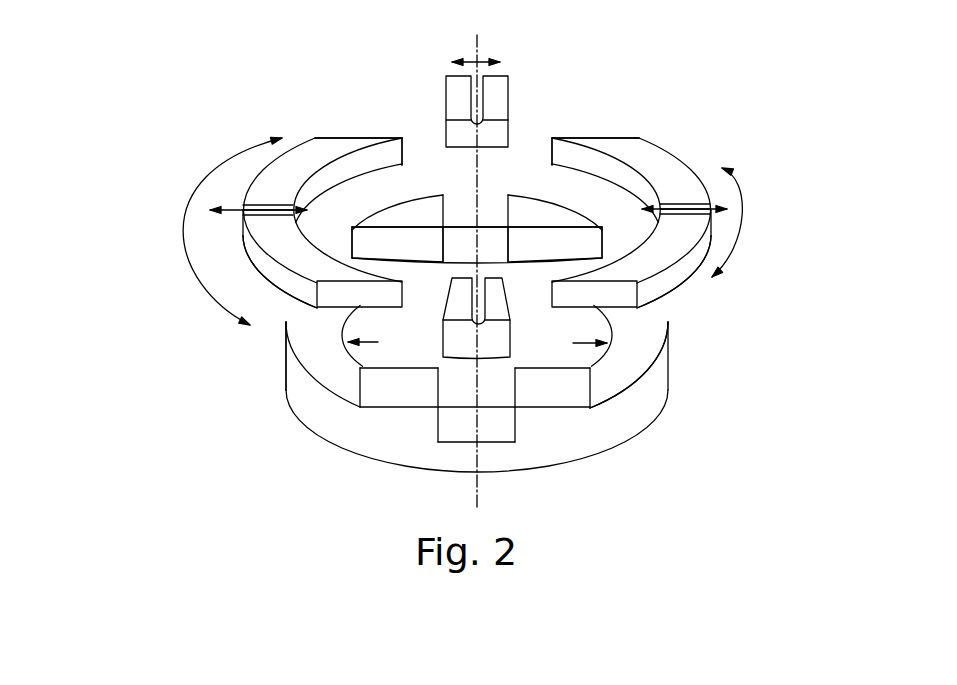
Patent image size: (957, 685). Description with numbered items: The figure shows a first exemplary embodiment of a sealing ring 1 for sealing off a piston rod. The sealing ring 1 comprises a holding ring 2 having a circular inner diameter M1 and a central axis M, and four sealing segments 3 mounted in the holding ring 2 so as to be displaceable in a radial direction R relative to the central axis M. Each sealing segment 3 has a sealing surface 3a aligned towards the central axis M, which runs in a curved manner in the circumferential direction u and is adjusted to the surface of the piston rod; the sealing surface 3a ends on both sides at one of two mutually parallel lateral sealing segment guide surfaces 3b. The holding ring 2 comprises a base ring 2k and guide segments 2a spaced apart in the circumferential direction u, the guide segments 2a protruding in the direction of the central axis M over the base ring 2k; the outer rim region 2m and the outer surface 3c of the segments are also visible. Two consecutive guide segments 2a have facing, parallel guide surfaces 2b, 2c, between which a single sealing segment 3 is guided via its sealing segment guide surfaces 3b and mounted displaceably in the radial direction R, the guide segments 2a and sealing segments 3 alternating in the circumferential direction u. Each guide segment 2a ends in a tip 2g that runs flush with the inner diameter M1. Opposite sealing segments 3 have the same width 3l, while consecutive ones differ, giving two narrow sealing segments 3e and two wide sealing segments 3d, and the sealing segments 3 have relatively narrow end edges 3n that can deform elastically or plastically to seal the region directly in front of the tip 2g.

The sealing ring 1 is at (685, 53).
The holding ring 2 is at (490, 330).
The guide segment 2a is at (392, 212).
The guide surface 2b is at (453, 212).
The guide surface 2c is at (353, 245).
The tip 2g is at (437, 242).
The base ring 2k is at (328, 362).
The outer rim of hub body 2m is at (637, 340).
The sealing segment 3 is at (457, 193).
The sealing surface 3a is at (388, 153).
The sealing segment guide surface 3b is at (322, 298).
The outer circumferential surface of ring 3c is at (282, 282).
The wide sealing segment 3d is at (288, 173).
The narrow sealing segment 3e is at (500, 82).
The width 3l is at (193, 205).
The end edge 3n is at (402, 152).
The central axis M is at (473, 40).
The inner diameter M1 is at (477, 337).
The radial direction R is at (240, 213).
The circumferential direction u is at (742, 208).